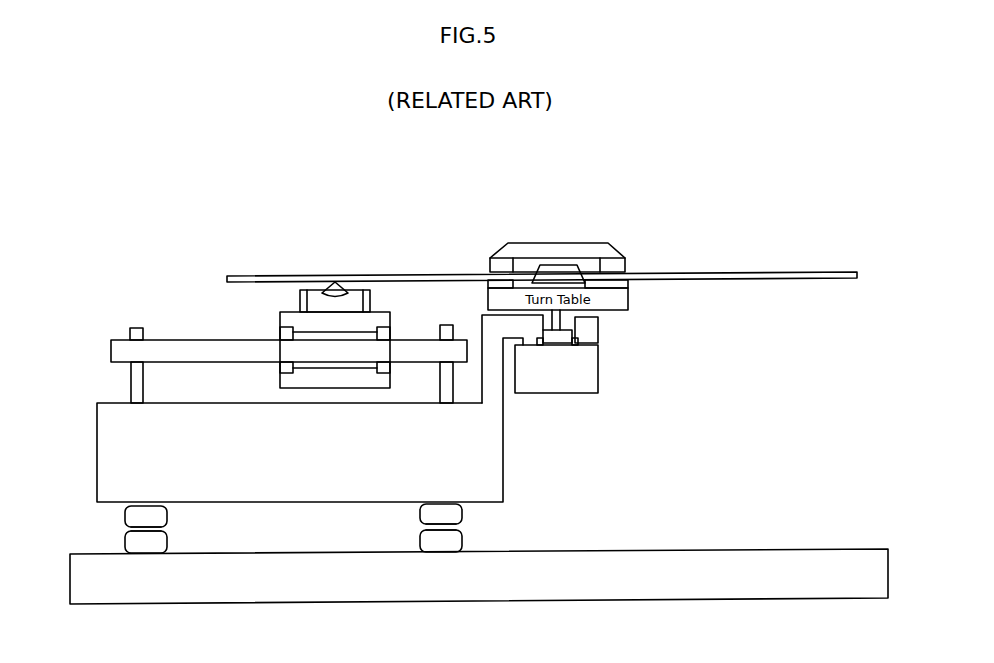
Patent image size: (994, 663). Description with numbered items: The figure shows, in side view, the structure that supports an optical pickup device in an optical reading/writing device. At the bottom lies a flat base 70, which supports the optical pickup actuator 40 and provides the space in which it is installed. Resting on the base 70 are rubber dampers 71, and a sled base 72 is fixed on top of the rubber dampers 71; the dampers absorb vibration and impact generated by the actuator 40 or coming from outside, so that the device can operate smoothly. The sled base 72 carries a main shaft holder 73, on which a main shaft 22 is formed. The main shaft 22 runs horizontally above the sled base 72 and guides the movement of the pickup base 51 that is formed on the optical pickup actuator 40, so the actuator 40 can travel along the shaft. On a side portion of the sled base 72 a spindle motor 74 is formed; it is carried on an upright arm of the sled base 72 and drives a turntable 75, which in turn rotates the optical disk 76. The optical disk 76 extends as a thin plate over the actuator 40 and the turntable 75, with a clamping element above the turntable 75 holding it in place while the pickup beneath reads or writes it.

The main shaft 22 is at (158, 340).
The optical pickup actuator 40 is at (317, 302).
The pickup base 51 is at (297, 380).
The base 70 is at (698, 566).
The rubber damper 71 is at (147, 548).
The sled base 72 is at (492, 474).
The main shaft holder 73 is at (133, 383).
The spindle motor 74 is at (585, 393).
The turntable 75 is at (570, 248).
The optical disk 76 is at (691, 280).